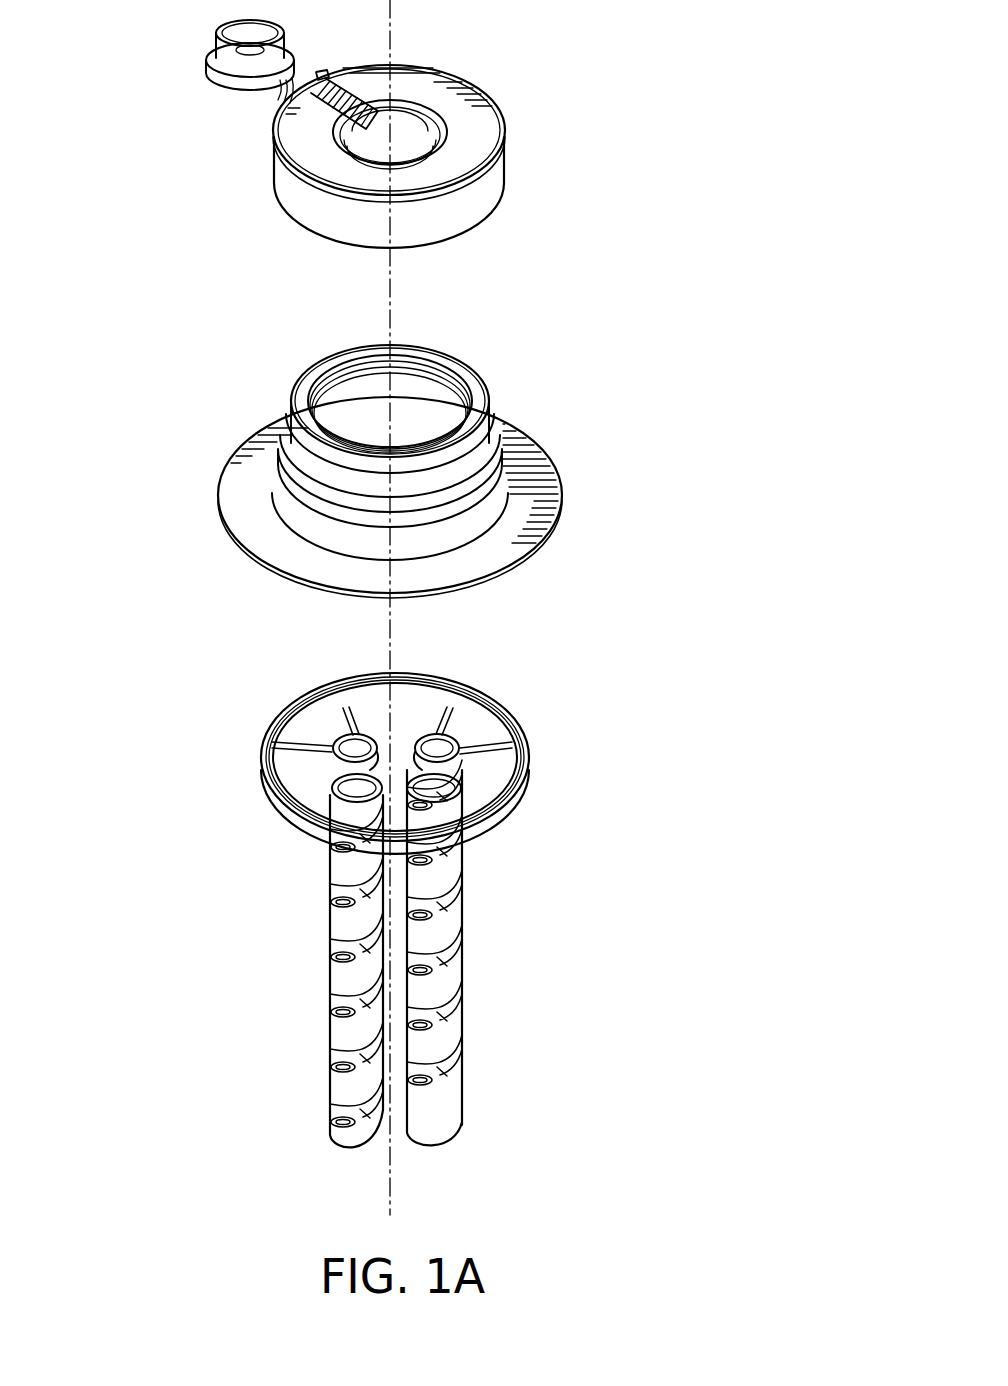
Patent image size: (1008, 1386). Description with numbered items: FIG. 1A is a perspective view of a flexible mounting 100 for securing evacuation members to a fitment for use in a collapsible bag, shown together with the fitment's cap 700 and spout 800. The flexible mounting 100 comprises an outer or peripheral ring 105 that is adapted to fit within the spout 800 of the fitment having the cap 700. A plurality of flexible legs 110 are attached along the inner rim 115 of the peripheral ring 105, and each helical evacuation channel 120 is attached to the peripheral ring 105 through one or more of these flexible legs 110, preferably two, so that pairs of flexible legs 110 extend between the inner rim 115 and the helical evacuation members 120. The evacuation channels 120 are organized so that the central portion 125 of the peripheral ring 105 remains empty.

The cap 700 is at (532, 112).
The spout 800 is at (578, 470).
The flexible mounting 100 is at (411, 875).
The peripheral ring 105 is at (487, 697).
The flexible legs 110 is at (312, 817).
The inner rim 115 is at (420, 702).
The evacuation channel 120 is at (454, 953).
The central portion 125 is at (373, 720).